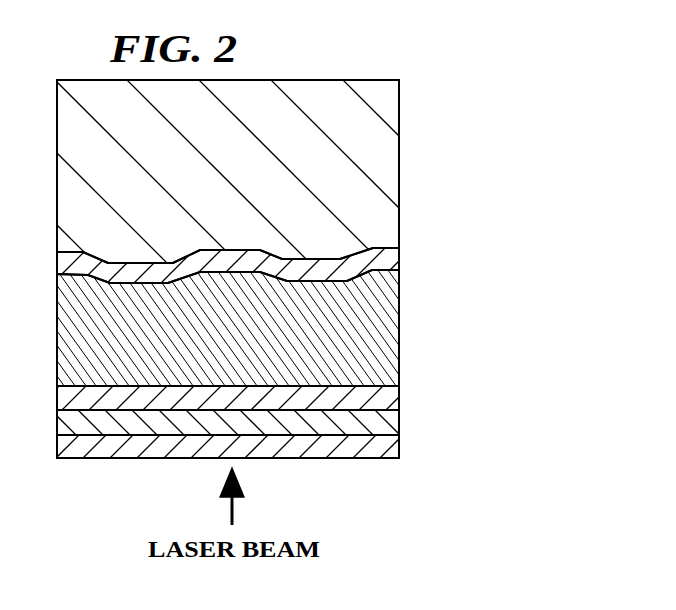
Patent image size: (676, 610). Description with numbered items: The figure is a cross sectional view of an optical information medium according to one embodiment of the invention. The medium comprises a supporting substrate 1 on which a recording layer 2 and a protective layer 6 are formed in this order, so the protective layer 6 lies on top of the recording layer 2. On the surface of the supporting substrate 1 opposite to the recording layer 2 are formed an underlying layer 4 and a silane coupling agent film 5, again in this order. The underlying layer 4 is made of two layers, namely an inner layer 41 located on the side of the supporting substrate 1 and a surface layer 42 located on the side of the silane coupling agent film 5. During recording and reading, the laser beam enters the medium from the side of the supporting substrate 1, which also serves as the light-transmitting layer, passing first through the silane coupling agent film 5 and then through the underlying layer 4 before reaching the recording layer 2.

The protective layer 6 is at (399, 215).
The recording layer 2 is at (399, 262).
The supporting substrate 1 is at (399, 301).
The underlying layer 4 is at (305, 389).
The inner layer 41 is at (399, 397).
The surface layer 42 is at (399, 418).
The silane coupling agent film 5 is at (399, 443).